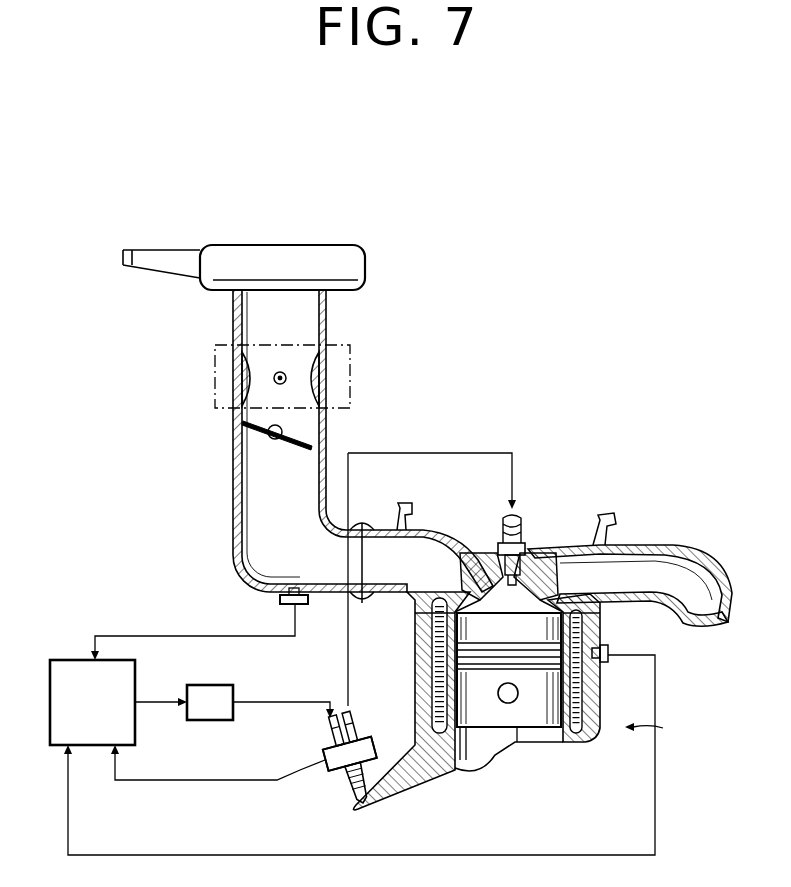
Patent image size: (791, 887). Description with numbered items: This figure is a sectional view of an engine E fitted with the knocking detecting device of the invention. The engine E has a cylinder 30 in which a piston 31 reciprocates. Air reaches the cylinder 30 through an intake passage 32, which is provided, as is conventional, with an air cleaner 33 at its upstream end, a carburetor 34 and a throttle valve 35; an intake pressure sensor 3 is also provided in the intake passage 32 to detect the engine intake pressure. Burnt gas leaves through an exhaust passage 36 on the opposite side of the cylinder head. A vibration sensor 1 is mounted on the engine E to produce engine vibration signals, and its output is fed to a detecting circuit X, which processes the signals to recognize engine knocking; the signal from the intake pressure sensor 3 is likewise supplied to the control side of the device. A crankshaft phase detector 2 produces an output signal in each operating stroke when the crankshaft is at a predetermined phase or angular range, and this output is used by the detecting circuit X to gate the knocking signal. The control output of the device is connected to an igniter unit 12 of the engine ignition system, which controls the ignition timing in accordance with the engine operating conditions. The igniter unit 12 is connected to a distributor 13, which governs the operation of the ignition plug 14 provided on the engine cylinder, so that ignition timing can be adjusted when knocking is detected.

The vibration sensor 1 is at (608, 650).
The crankshaft phase detector 2 is at (325, 757).
The intake pressure sensor 3 is at (298, 604).
The igniter unit 12 is at (225, 685).
The distributor 13 is at (338, 768).
The ignition plug 14 is at (522, 546).
The cylinder 30 is at (445, 762).
The piston 31 is at (543, 722).
The intake passage 32 is at (232, 556).
The air cleaner 33 is at (290, 252).
The carburetor 34 is at (346, 374).
The throttle valve 35 is at (312, 436).
The exhaust passage 36 is at (692, 548).
The detecting circuit X is at (48, 737).
The engine E is at (652, 729).